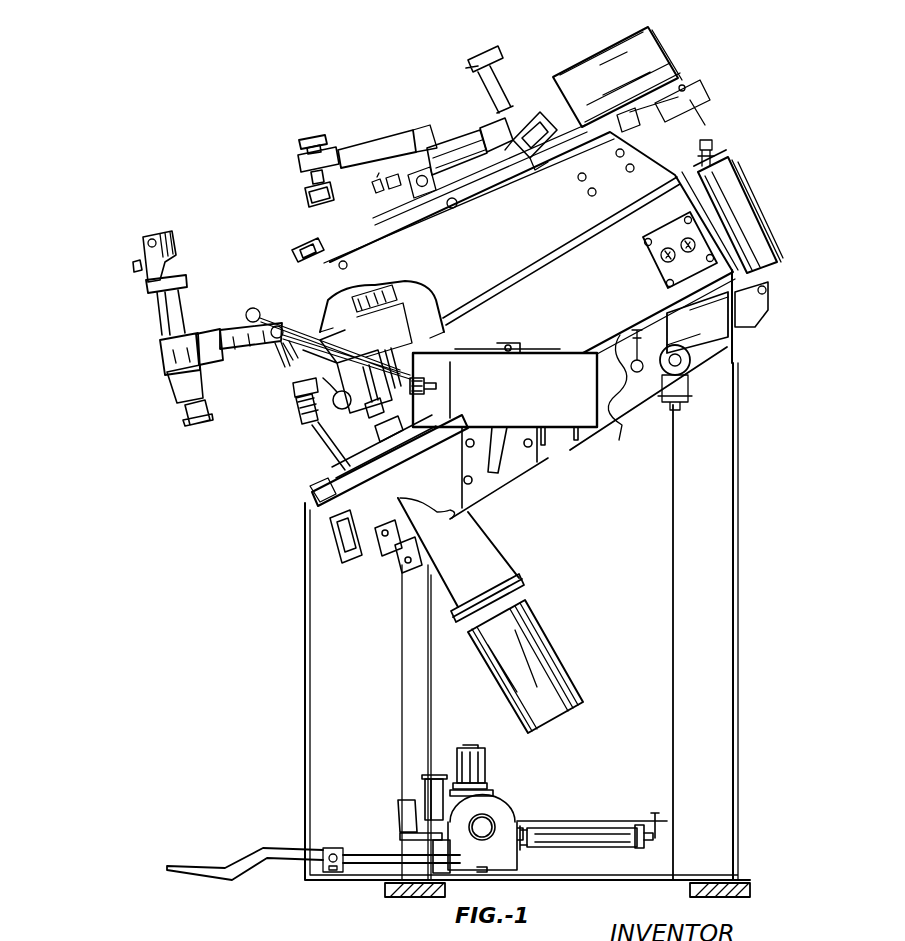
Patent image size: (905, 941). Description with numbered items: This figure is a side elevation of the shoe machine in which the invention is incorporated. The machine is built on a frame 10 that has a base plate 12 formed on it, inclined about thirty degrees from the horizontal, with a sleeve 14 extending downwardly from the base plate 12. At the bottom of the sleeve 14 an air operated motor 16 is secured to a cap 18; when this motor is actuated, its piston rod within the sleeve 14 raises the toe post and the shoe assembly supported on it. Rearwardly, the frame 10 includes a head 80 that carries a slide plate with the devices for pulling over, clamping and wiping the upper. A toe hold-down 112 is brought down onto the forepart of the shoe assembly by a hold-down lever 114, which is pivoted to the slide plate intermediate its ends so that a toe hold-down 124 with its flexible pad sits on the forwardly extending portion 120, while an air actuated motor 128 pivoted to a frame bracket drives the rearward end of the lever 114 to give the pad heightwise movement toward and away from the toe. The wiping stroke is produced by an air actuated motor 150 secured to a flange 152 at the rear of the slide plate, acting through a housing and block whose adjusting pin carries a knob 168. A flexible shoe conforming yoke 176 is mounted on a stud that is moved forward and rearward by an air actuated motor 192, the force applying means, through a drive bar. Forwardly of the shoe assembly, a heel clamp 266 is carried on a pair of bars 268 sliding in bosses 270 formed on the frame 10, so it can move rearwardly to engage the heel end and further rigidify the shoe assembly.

The frame 10 is at (655, 311).
The base plate 12 is at (340, 490).
The sleeve 14 is at (470, 543).
The air operated motor 16 is at (550, 672).
The cap 18 is at (515, 600).
The head 80 is at (517, 237).
The toe hold-down 112 is at (290, 170).
The hold-down lever 114 is at (432, 150).
The forwardly extending portion 120 is at (402, 136).
The toe hold-down 124 is at (305, 184).
The air actuated motor 128 is at (740, 220).
The air actuated motor 150 is at (597, 74).
The flange 152 is at (546, 96).
The knob 168 is at (483, 62).
The yoke 176 is at (283, 245).
The air actuated motor 192 is at (456, 140).
The heel clamp 266 is at (150, 222).
The bars 268 is at (250, 352).
The bosses 270 is at (335, 303).